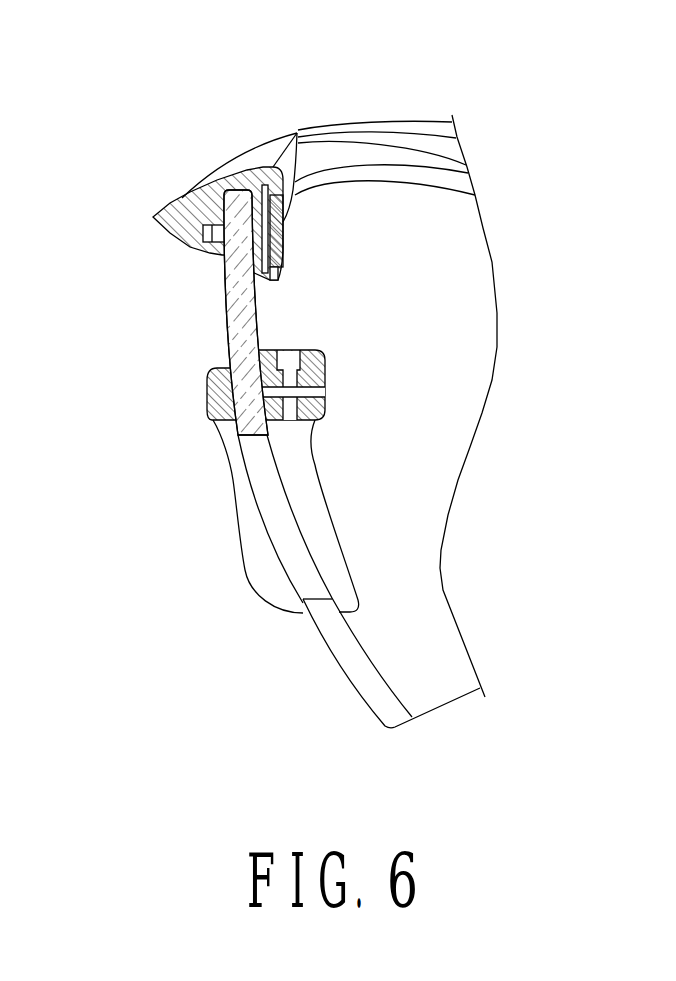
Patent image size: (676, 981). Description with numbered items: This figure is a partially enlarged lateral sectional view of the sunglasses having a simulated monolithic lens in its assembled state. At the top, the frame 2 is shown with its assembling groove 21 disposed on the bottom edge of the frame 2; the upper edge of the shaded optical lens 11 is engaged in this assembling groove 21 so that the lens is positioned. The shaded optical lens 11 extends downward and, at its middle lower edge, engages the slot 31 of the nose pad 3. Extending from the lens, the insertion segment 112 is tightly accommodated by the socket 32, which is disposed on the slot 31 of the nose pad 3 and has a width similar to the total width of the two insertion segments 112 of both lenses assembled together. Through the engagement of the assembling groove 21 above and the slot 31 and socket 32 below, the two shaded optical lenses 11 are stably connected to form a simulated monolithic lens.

The frame 2 is at (272, 131).
The assembling groove 21 is at (193, 183).
The shaded optical lens 11 is at (473, 315).
The insertion segment 112 is at (247, 408).
The socket 32 is at (207, 381).
The slot 31 is at (250, 482).
The nose pad 3 is at (246, 573).